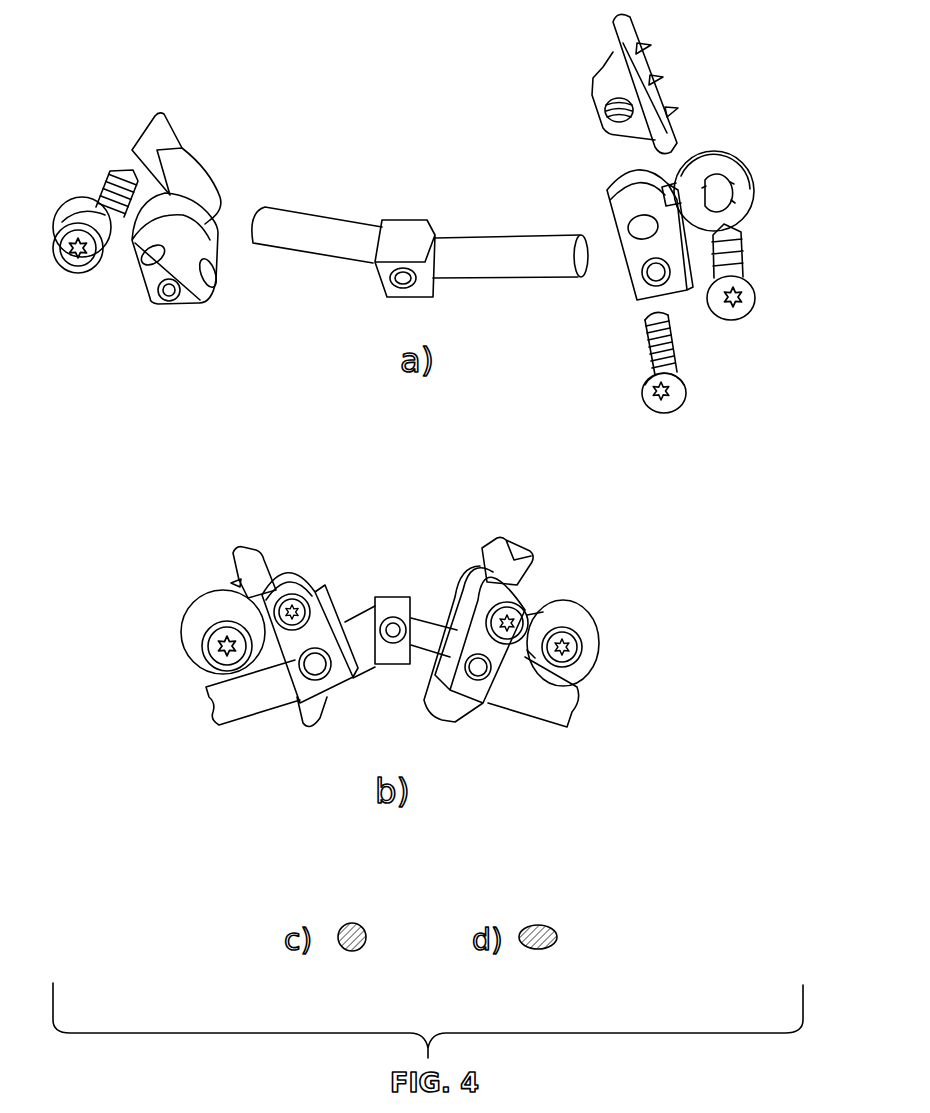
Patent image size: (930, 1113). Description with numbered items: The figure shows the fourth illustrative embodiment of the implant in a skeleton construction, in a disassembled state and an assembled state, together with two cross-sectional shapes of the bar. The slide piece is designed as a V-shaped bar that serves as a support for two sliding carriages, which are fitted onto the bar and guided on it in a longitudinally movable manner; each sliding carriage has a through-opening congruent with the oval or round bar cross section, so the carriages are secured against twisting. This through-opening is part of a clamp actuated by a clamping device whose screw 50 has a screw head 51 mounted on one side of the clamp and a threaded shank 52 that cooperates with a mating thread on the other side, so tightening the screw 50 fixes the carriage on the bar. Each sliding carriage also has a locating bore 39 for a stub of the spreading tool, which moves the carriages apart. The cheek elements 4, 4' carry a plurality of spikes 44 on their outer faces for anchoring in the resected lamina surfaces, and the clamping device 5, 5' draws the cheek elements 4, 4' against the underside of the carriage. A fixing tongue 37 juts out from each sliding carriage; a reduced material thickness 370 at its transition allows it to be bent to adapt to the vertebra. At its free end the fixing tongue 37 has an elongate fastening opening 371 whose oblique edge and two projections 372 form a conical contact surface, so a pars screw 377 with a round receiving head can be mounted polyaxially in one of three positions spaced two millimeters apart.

The cheek element 4 is at (579, 299).
The cheek element 4' is at (229, 410).
The clamping device 5 is at (469, 586).
The clamping device 5' is at (307, 577).
The fixing tongue 37 is at (74, 207).
The locating bore 39 is at (166, 292).
The spikes 44 is at (670, 110).
The screw 50 is at (665, 402).
The screw head 51 is at (655, 408).
The shank 52 is at (648, 343).
The reduced material thickness 370 is at (697, 160).
The fastening opening 371 is at (735, 201).
The projections 372 is at (731, 185).
The pars screw 377 is at (83, 262).